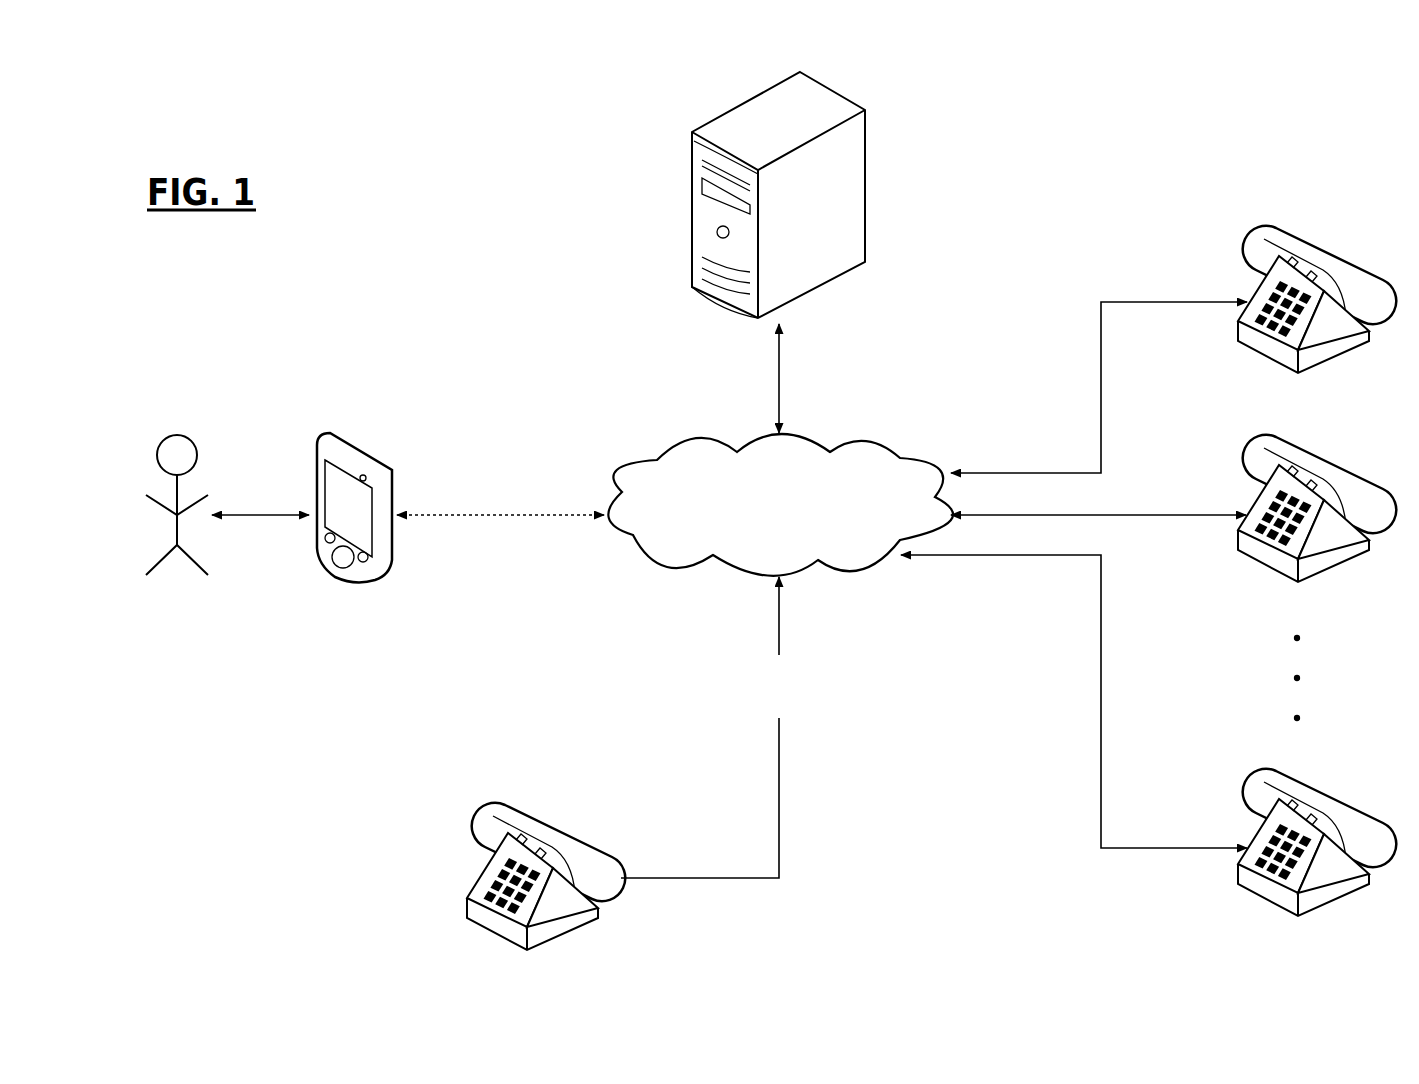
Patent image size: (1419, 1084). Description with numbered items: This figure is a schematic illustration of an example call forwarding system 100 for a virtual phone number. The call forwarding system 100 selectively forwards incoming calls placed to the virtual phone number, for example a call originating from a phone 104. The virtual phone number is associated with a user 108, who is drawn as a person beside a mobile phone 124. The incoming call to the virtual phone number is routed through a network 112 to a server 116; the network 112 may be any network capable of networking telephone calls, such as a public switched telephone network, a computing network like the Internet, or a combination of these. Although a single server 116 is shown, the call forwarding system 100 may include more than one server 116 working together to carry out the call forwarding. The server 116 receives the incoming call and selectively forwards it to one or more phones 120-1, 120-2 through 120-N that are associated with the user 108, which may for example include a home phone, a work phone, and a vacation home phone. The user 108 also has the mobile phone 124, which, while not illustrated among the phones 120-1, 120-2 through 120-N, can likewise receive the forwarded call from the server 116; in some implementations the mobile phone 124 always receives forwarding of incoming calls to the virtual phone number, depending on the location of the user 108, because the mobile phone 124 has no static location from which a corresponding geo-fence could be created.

The call forwarding system 100 is at (370, 86).
The phone 104 is at (562, 826).
The user 108 is at (138, 424).
The network 112 is at (866, 440).
The server 116 is at (867, 195).
The phone 120-1 is at (1333, 252).
The phone 120-2 is at (1329, 458).
The phone 120-N is at (1331, 793).
The mobile phone 124 is at (364, 448).